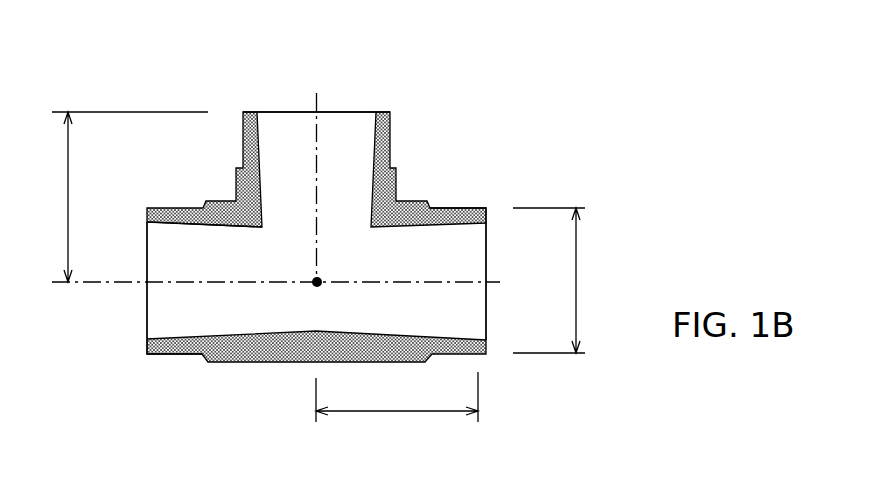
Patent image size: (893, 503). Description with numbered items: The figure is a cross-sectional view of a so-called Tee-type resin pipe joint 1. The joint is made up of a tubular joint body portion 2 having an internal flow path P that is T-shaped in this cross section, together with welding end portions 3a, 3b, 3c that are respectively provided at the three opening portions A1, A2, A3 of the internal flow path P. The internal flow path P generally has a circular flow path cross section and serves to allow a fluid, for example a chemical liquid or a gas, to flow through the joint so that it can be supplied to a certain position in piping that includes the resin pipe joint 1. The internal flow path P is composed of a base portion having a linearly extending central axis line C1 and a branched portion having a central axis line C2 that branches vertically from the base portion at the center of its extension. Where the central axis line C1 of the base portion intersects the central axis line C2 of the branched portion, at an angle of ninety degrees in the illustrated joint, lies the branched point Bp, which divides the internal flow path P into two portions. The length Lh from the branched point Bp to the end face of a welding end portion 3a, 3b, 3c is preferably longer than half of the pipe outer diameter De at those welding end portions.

The resin pipe joint 1 is at (315, 241).
The joint body portion 2 is at (251, 382).
The welding end portion 3a is at (383, 112).
The welding end portion 3b is at (487, 213).
The welding end portion 3c is at (147, 354).
The opening portion A1 is at (280, 112).
The opening portion A2 is at (486, 313).
The opening portion A3 is at (147, 250).
The internal flow path P is at (290, 234).
The branched point Bp is at (317, 282).
The central axis line C1 is at (295, 284).
The central axis line C2 is at (320, 172).
The length Lh is at (251, 284).
The pipe outer diameter De is at (566, 280).